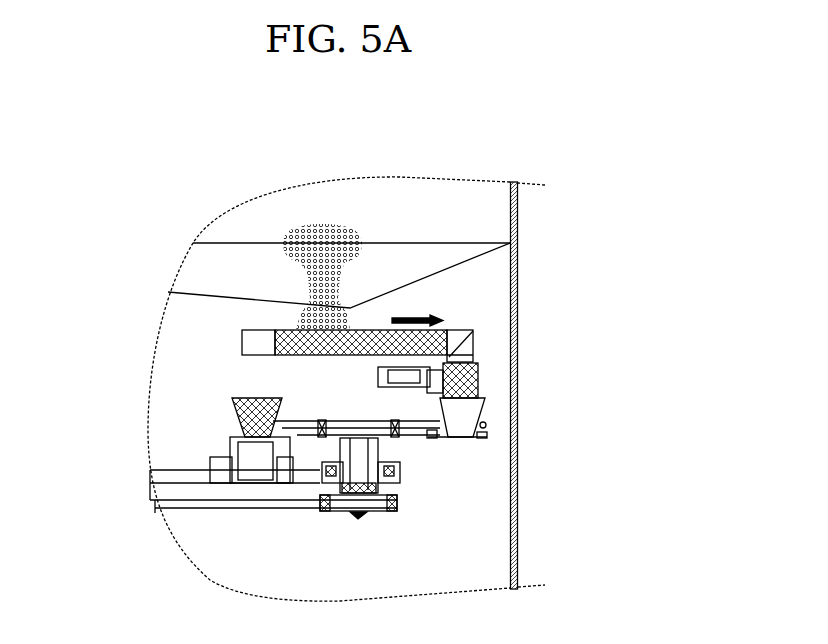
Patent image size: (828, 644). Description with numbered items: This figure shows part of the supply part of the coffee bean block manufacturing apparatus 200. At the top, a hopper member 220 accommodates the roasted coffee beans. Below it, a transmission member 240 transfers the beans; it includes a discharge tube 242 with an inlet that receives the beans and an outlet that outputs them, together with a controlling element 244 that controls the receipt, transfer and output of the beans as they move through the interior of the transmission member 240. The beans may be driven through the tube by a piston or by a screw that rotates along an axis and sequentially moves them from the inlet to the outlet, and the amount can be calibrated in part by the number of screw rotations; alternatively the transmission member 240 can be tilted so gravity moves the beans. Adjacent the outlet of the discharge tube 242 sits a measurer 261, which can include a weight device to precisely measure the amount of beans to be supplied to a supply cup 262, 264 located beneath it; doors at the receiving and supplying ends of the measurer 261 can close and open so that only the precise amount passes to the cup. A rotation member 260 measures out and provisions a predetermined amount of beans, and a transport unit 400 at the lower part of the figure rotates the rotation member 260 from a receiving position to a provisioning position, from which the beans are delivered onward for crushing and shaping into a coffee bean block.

The coffee bean block manufacturing apparatus 200 is at (97, 140).
The hopper member 220 is at (466, 238).
The transmission member 240 is at (477, 355).
The discharge tube 242 is at (473, 331).
The controlling element 244 is at (267, 335).
The rotation member 260 is at (399, 451).
The measurer 261 is at (484, 381).
The supply cup 262 is at (487, 425).
The supply cup 264 is at (475, 408).
The transport unit 400 is at (196, 517).